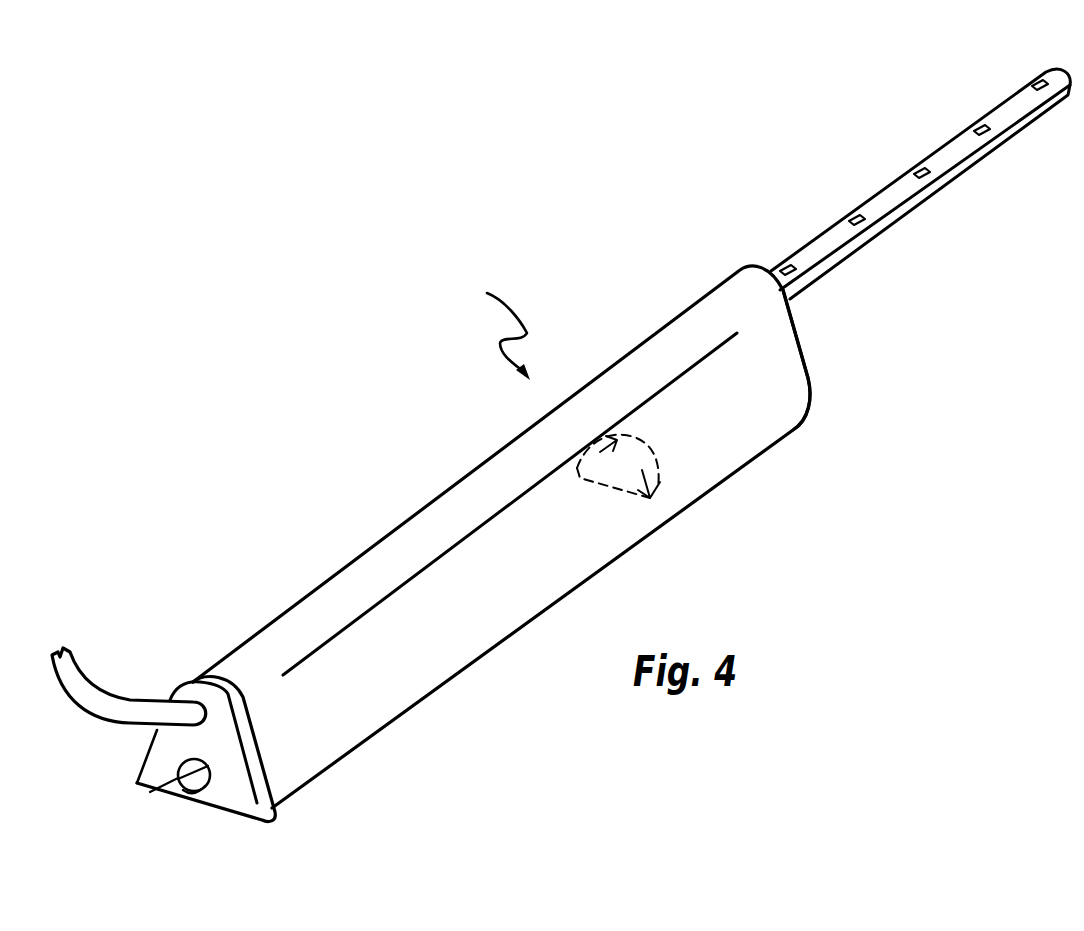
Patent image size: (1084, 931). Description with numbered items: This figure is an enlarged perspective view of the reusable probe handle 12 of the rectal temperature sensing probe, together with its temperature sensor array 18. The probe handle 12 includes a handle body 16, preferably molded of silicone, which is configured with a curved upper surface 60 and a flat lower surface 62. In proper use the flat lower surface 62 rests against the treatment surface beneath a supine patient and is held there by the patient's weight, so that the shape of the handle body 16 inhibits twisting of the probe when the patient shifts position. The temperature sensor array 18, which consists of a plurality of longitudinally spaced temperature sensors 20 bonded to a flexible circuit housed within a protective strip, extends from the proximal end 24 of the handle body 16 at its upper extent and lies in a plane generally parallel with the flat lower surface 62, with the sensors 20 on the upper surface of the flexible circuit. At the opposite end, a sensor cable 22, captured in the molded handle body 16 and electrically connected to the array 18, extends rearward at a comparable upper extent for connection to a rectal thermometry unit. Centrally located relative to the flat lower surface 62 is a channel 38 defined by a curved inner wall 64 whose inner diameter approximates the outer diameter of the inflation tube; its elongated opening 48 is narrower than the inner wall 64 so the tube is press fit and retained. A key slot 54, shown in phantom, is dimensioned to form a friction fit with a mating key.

The probe handle 12 is at (495, 329).
The handle body 16 is at (711, 290).
The temperature sensor array 18 is at (1053, 68).
The temperature sensors 20 is at (1037, 82).
The sensor cable 22 is at (137, 710).
The proximal end 24 is at (808, 380).
The channel 38 is at (182, 764).
The elongated opening 48 is at (193, 800).
The key slot 54 is at (660, 463).
The curved upper surface 60 is at (487, 483).
The flat lower surface 62 is at (233, 820).
The curved inner wall 64 is at (152, 790).